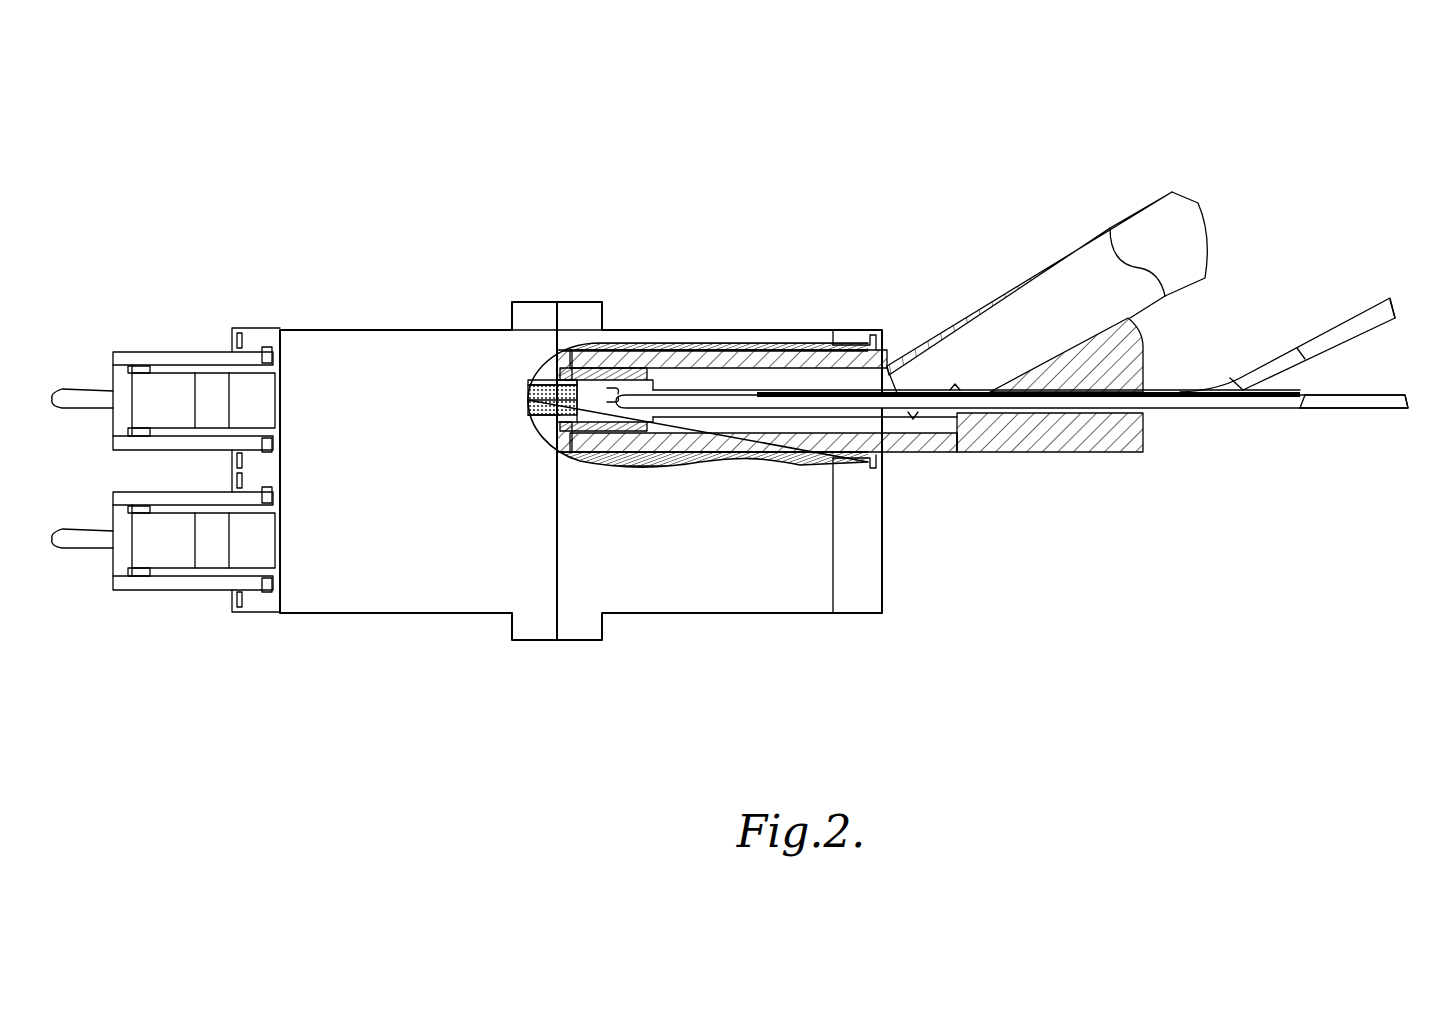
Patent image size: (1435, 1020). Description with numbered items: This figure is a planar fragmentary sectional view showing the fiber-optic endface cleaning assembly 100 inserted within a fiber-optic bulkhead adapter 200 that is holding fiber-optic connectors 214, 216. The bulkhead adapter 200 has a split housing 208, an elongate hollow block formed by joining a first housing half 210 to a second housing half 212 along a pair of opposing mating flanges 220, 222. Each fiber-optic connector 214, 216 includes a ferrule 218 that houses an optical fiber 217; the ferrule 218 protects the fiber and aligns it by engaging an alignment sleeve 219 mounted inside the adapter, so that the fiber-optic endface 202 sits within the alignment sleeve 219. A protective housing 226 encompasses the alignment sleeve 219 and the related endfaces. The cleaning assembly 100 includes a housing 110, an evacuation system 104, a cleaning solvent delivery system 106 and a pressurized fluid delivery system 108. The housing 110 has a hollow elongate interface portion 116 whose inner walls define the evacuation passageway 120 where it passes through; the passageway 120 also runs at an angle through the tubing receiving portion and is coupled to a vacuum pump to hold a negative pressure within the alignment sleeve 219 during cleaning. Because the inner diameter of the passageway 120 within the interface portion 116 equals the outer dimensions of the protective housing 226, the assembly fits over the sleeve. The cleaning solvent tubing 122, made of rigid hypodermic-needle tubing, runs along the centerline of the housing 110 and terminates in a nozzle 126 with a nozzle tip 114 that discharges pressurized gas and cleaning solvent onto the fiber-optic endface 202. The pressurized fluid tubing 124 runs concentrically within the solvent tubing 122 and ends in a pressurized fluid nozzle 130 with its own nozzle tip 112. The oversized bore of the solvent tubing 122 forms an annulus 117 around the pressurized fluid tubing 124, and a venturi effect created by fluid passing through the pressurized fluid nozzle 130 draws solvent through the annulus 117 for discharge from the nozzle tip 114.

The fiber-optic endface cleaning assembly 100 is at (895, 155).
The evacuation system 104 is at (1136, 202).
The cleaning solvent delivery system 106 is at (1393, 298).
The pressurized fluid delivery system 108 is at (1382, 410).
The housing 110 is at (1010, 453).
The nozzle tip 112 is at (750, 397).
The nozzle tip 114 is at (637, 357).
The interface portion 116 is at (802, 448).
The annulus 117 is at (933, 453).
The evacuation passageway 120 is at (1180, 191).
The cleaning solvent tubing 122 is at (1397, 305).
The pressurized fluid tubing 124 is at (1413, 395).
The nozzle 126 is at (672, 410).
The pressurized fluid nozzle 130 is at (827, 397).
The fiber-optic bulkhead adapter 200 is at (364, 265).
The fiber-optic endface 202 is at (580, 397).
The split housing 208 is at (557, 641).
The first housing half 210 is at (380, 614).
The second housing half 212 is at (705, 607).
The fiber-optic connector 214 is at (185, 349).
The fiber-optic connector 216 is at (173, 591).
The optical fiber 217 is at (557, 422).
The ferrule 218 is at (543, 427).
The alignment sleeve 219 is at (545, 383).
The mating flange 220 is at (535, 301).
The mating flange 222 is at (588, 301).
The protective housing 226 is at (597, 420).